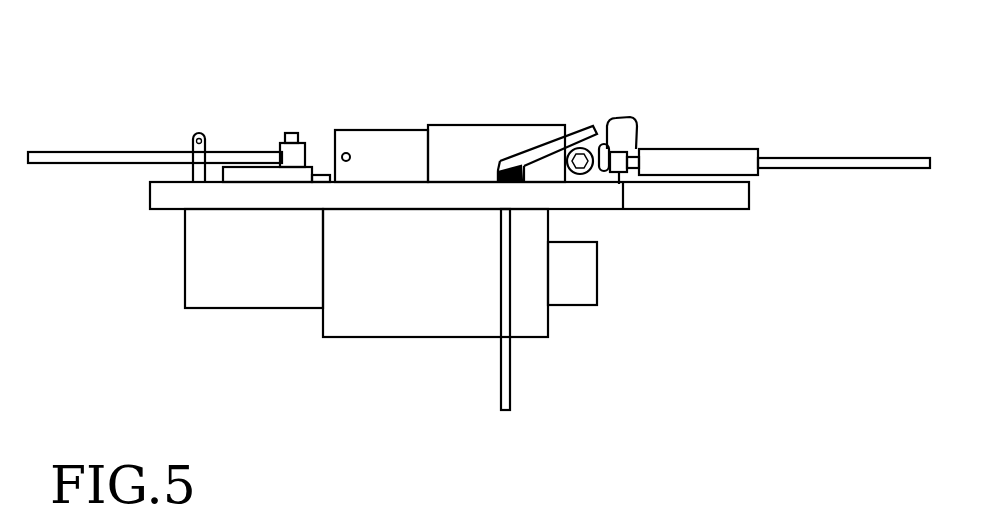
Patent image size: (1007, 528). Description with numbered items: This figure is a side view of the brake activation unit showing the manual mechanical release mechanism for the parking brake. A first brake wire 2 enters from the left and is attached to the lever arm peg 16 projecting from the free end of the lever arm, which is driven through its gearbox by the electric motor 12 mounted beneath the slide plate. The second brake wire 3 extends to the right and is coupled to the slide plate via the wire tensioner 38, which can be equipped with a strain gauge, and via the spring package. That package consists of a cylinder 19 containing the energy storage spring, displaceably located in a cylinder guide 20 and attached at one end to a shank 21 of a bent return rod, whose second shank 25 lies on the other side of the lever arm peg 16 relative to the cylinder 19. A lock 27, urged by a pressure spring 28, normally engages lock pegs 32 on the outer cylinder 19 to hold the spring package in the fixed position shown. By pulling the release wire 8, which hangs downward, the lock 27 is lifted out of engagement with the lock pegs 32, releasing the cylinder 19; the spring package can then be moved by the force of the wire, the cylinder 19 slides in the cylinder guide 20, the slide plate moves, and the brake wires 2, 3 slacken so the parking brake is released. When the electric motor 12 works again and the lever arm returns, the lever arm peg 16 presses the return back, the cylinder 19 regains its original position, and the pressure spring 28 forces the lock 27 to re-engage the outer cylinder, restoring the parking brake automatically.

The first brake wire 2 is at (58, 153).
The second brake wire 3 is at (828, 162).
The release wire 8 is at (510, 392).
The electric motor 12 is at (363, 325).
The lever arm peg 16 is at (293, 133).
The cylinder 19 is at (397, 133).
The cylinder guide 20 is at (458, 133).
The shank 21 is at (346, 153).
The second shank 25 is at (199, 133).
The lock 27 is at (637, 115).
The pressure spring 28 is at (499, 178).
The lock pegs 32 is at (620, 184).
The wire tensioner 38 is at (708, 157).